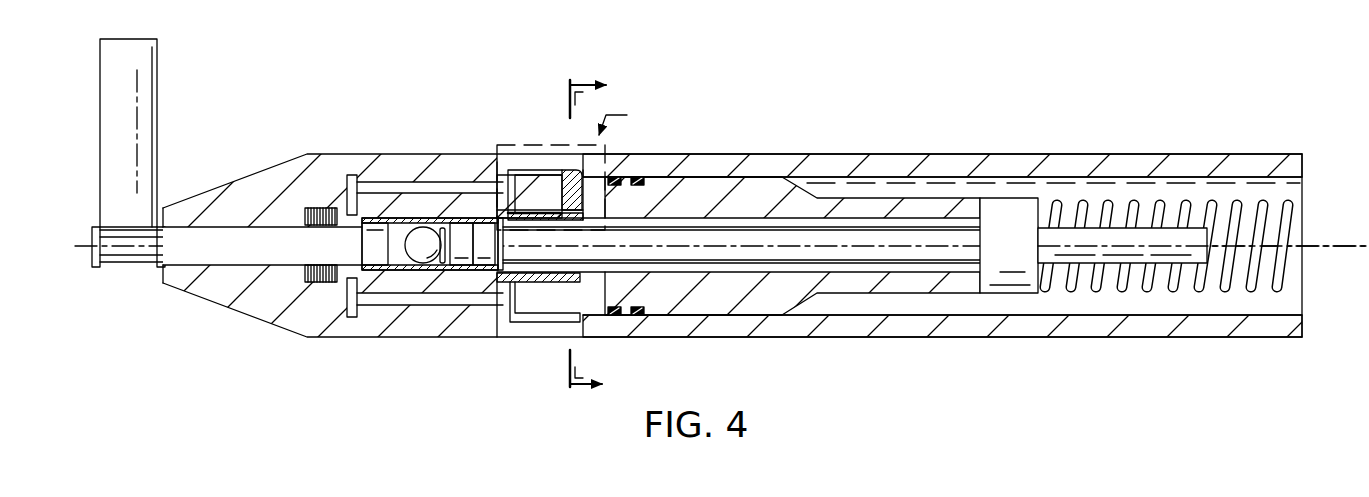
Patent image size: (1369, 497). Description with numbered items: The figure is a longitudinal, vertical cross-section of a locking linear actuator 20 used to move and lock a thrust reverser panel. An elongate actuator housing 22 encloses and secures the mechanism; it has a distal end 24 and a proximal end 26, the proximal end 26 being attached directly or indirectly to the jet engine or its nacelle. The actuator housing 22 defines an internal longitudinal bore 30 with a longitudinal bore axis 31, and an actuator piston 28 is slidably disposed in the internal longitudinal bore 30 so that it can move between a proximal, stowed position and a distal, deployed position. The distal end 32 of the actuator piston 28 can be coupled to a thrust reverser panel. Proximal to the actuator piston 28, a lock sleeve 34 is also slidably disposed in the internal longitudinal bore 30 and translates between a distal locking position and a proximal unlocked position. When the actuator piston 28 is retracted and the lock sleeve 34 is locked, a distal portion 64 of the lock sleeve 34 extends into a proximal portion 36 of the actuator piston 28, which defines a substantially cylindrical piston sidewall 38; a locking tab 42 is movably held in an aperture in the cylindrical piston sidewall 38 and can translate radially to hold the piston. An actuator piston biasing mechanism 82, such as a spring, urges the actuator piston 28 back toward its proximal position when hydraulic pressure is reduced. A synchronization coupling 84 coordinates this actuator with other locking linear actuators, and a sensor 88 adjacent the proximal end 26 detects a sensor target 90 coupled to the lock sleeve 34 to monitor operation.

The locking linear actuator 20 is at (481, 53).
The actuator housing 22 is at (1078, 152).
The distal end 24 is at (1292, 122).
The proximal end 26 is at (220, 166).
The actuator piston 28 is at (749, 308).
The internal longitudinal bore 30 is at (868, 178).
The longitudinal bore axis 31 is at (1340, 243).
The distal end of actuator piston 32 is at (967, 314).
The lock sleeve 34 is at (410, 216).
The proximal portion of actuator piston 36 is at (552, 330).
The cylindrical piston sidewall 38 is at (512, 170).
The locking tab 42 is at (568, 170).
The distal portion of lock sleeve 64 is at (537, 289).
The actuator piston biasing mechanism 82 is at (1145, 292).
The synchronization coupling 84 is at (831, 268).
The sensor 88 is at (100, 133).
The sensor target 90 is at (110, 288).